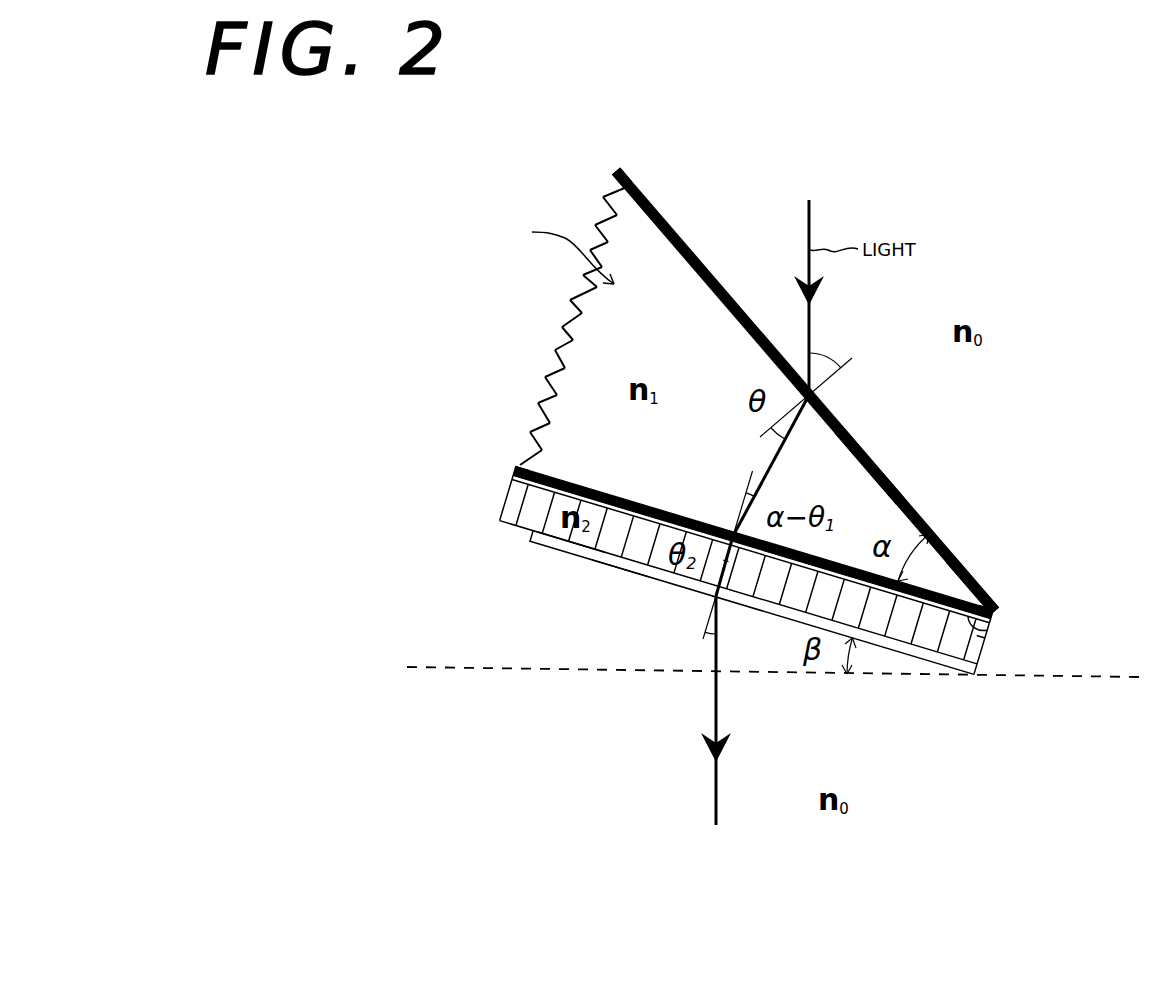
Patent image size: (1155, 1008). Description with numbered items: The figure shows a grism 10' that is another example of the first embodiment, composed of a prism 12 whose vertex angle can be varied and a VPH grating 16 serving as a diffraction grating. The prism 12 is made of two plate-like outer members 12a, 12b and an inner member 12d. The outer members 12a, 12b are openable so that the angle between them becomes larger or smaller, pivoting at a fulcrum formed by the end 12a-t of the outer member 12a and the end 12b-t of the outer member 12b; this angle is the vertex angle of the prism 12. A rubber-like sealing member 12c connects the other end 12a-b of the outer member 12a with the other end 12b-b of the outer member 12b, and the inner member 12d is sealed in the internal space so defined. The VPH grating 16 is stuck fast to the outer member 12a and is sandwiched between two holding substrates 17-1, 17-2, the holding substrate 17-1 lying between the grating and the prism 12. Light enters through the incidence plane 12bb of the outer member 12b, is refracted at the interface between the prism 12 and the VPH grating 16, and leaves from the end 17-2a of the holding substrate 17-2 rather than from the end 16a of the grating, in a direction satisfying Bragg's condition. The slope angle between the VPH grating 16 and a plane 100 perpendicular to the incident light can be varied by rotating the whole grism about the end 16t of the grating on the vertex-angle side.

The grism 10' is at (757, 386).
The prism 12 is at (671, 231).
The outer member 12a is at (635, 503).
The other end of outer member 12a 12a-b is at (540, 456).
The end of outer member 12a 12a-t is at (996, 614).
The outer member 12b is at (734, 298).
The other end of outer member 12b 12b-b is at (643, 192).
The end of outer member 12b 12b-t is at (958, 563).
The incidence plane 12bb is at (897, 488).
The rubber-like sealing member 12c is at (548, 370).
The inner member 12d is at (584, 342).
The VPH grating 16 is at (506, 506).
The end of VPH grating 16a is at (573, 538).
The end of VPH grating 16t is at (967, 650).
The holding substrate 17-1 is at (516, 472).
The holding substrate 17-2 is at (540, 534).
The end of holding substrate 17-2 17-2a is at (617, 567).
The plane 100 is at (452, 667).